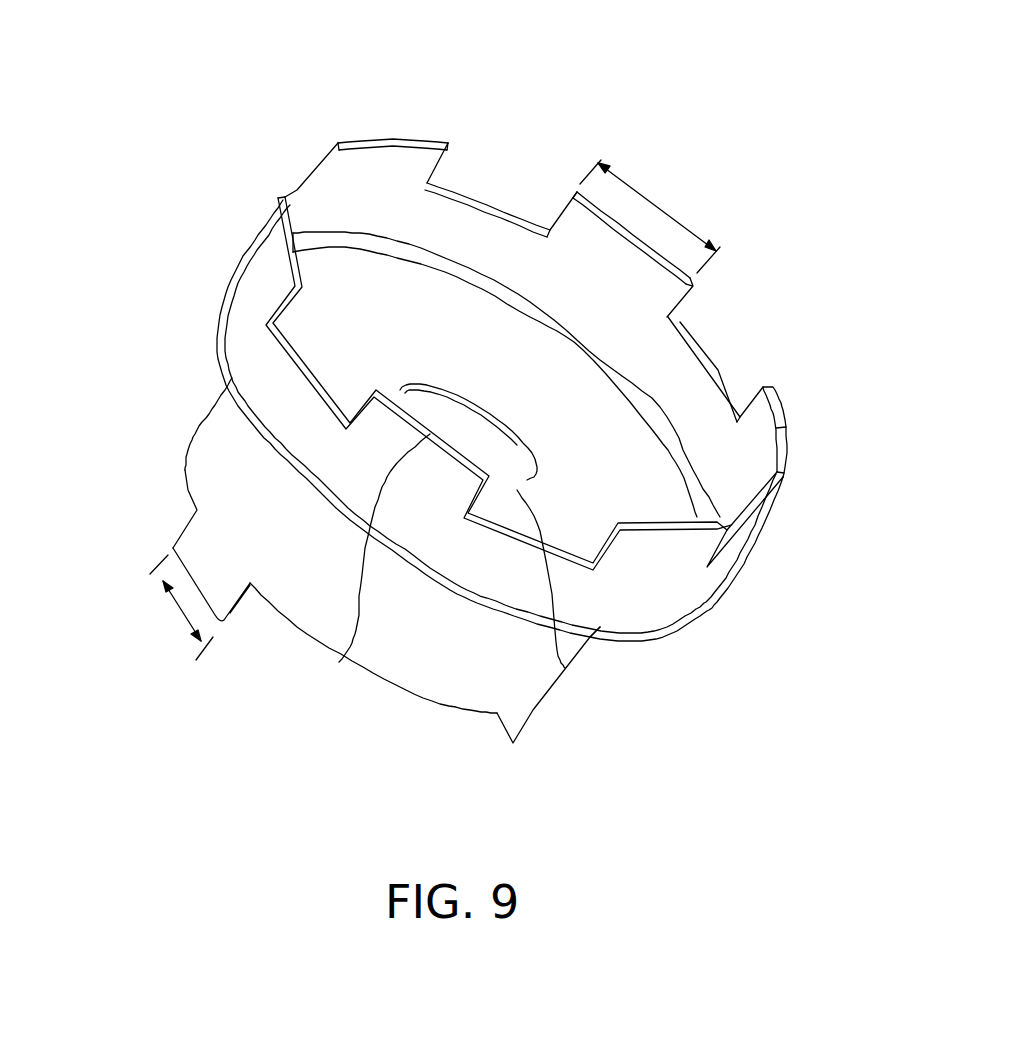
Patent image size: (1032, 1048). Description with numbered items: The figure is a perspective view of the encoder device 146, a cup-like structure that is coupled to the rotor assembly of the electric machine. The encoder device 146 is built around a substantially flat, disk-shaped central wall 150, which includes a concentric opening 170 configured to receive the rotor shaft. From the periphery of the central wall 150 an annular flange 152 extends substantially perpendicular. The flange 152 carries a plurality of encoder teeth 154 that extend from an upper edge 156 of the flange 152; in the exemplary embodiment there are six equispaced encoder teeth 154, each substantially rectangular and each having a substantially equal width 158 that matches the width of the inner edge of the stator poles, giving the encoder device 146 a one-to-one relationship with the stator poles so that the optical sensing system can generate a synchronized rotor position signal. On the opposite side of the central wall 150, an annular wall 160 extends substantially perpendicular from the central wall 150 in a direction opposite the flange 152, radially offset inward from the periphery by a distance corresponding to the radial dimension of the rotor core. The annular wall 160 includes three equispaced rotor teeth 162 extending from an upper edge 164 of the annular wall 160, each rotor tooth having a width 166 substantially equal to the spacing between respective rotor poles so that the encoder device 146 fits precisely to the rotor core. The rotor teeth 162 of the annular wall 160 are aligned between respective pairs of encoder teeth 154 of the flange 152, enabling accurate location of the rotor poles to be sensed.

The encoder device 146 is at (468, 411).
The central wall 150 is at (472, 332).
The annular flange 152 is at (657, 567).
The encoder teeth 154 is at (393, 137).
The upper edge 156 is at (462, 192).
The width 158 is at (647, 195).
The annular wall 160 is at (205, 413).
The rotor teeth 162 is at (213, 628).
The upper edge 164 is at (185, 470).
The width 166 is at (178, 607).
The concentric opening 170 is at (603, 637).